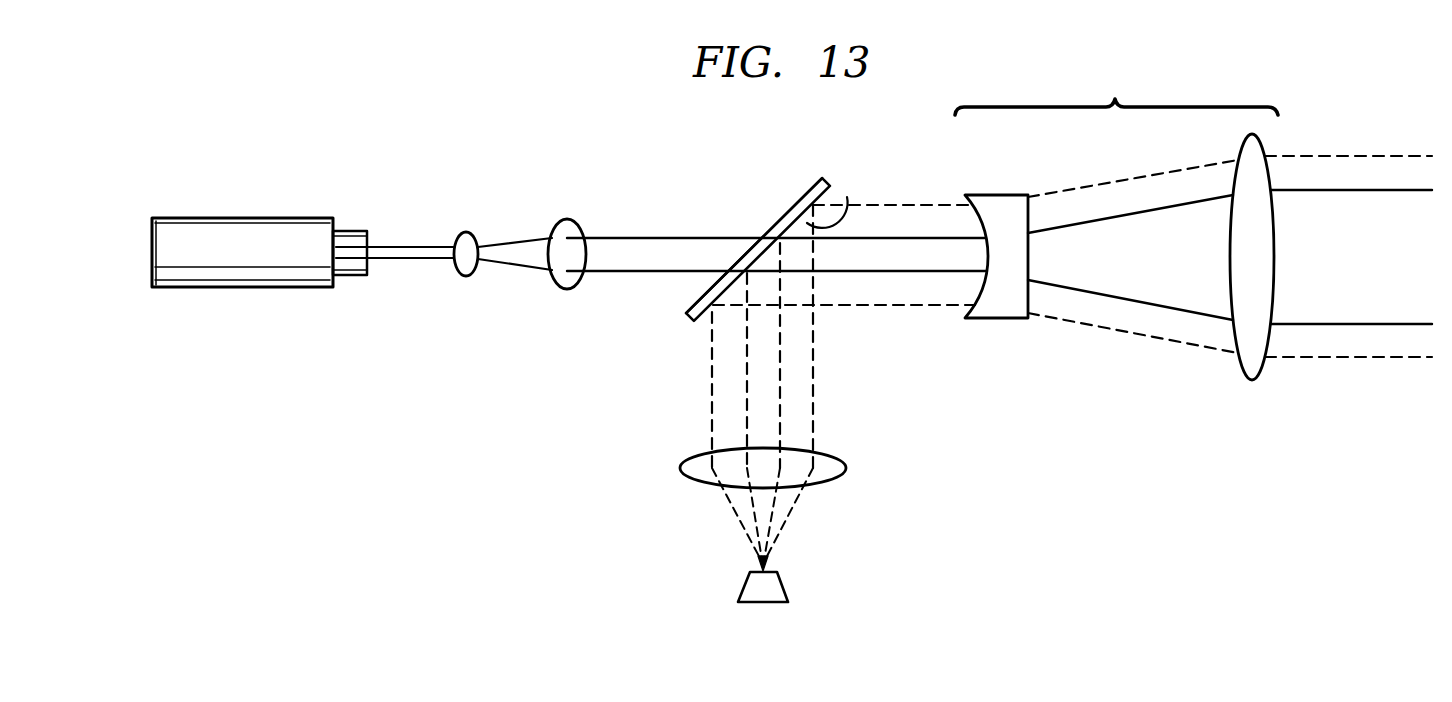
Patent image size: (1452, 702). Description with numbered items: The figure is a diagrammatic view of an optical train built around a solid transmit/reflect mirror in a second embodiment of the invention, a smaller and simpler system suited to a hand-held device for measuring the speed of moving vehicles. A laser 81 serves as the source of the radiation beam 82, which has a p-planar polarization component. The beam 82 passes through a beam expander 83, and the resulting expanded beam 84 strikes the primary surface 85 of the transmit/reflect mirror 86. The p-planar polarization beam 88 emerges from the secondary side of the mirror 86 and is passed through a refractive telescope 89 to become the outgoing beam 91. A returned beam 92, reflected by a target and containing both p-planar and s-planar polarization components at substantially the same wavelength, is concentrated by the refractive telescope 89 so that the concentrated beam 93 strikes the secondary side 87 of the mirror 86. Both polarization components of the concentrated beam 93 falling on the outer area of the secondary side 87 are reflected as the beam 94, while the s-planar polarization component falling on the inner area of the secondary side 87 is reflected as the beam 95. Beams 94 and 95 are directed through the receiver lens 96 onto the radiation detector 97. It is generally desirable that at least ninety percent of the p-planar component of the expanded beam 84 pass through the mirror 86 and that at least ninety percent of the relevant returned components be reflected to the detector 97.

The laser 81 is at (240, 218).
The radiation beam 82 is at (403, 247).
The beam expander 83 is at (495, 207).
The expanded beam 84 is at (638, 237).
The primary surface 85 is at (782, 217).
The transmit/reflect mirror 86 is at (678, 329).
The secondary side 87 is at (847, 197).
The p-planar polarization beam 88 is at (929, 276).
The refractive telescope 89 is at (1116, 222).
The outgoing beam 91 is at (1357, 190).
The returned beam 92 is at (1358, 358).
The concentrated beam 93 is at (906, 205).
The beam 94 is at (712, 417).
The beam 95 is at (781, 369).
The receiver lens 96 is at (697, 482).
The radiation detector 97 is at (740, 582).